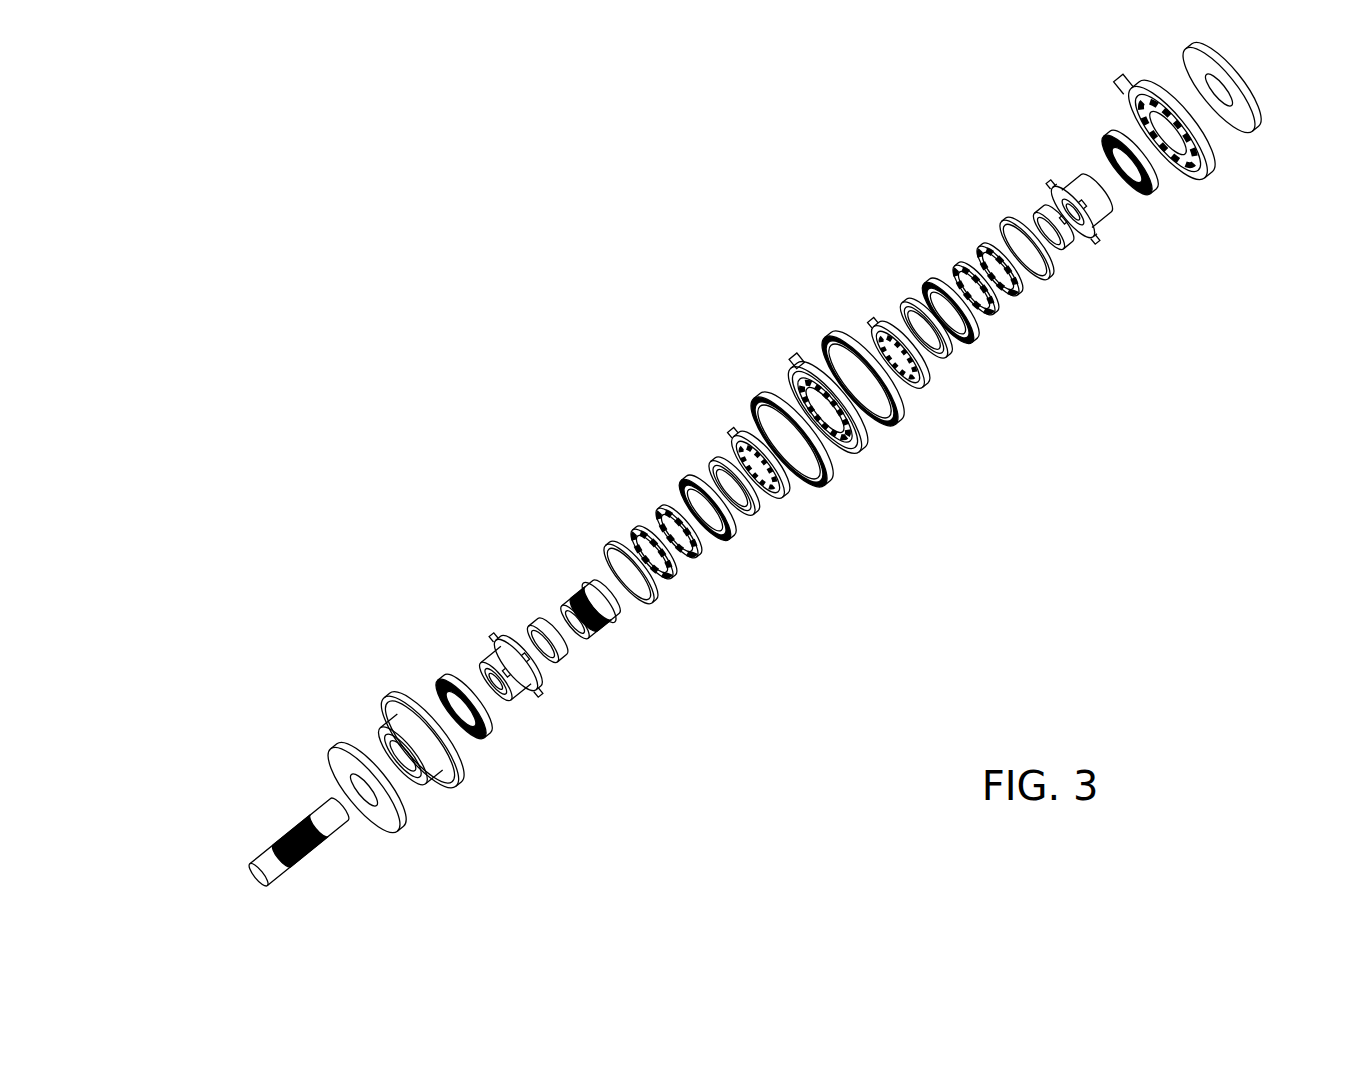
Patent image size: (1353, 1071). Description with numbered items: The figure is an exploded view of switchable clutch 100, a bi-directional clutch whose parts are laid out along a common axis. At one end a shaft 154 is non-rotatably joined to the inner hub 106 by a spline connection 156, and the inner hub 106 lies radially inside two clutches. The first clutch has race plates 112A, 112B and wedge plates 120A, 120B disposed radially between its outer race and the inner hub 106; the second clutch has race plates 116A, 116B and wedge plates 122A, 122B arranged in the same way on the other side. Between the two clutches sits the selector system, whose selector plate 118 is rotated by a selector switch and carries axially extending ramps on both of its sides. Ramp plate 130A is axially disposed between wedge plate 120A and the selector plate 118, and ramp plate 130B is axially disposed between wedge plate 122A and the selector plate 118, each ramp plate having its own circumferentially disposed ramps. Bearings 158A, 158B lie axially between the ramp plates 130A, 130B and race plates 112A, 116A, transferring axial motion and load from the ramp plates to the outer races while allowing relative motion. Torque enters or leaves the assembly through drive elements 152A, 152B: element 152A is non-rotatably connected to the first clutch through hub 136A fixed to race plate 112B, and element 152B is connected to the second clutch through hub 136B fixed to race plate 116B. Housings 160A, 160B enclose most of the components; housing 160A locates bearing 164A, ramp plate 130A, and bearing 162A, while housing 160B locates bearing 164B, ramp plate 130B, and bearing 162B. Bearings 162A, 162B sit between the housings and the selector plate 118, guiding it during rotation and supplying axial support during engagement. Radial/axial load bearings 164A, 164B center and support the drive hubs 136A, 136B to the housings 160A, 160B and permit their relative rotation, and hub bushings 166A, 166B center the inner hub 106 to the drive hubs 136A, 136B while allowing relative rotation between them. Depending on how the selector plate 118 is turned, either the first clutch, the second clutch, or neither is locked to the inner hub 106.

The switchable clutch 100 is at (432, 215).
The inner hub 106 is at (582, 582).
The race plate 112A is at (683, 478).
The race plate 112B is at (652, 600).
The race plate 116A is at (927, 282).
The race plate 116B is at (1003, 221).
The selector plate 118 is at (788, 363).
The wedge plate 120A is at (633, 527).
The wedge plate 120B is at (702, 557).
The wedge plate 122A is at (998, 313).
The wedge plate 122B is at (982, 250).
The ramp plate 130A is at (737, 443).
The ramp plate 130B is at (875, 325).
The hub 136A is at (493, 638).
The hub 136B is at (1100, 237).
The drive element 152A is at (330, 750).
The drive element 152B is at (1253, 122).
The shaft 154 is at (252, 852).
The spline connection 156 is at (305, 857).
The bearing 158A is at (757, 513).
The bearing 158B is at (947, 358).
The housing 160A is at (387, 698).
The housing 160B is at (1203, 180).
The bearing 162A is at (825, 485).
The bearing 162B is at (898, 420).
The radial/axial load bearing 164A is at (488, 732).
The radial/axial load bearing 164B is at (1100, 140).
The hub bushing 166A is at (557, 653).
The hub bushing 166B is at (1043, 207).